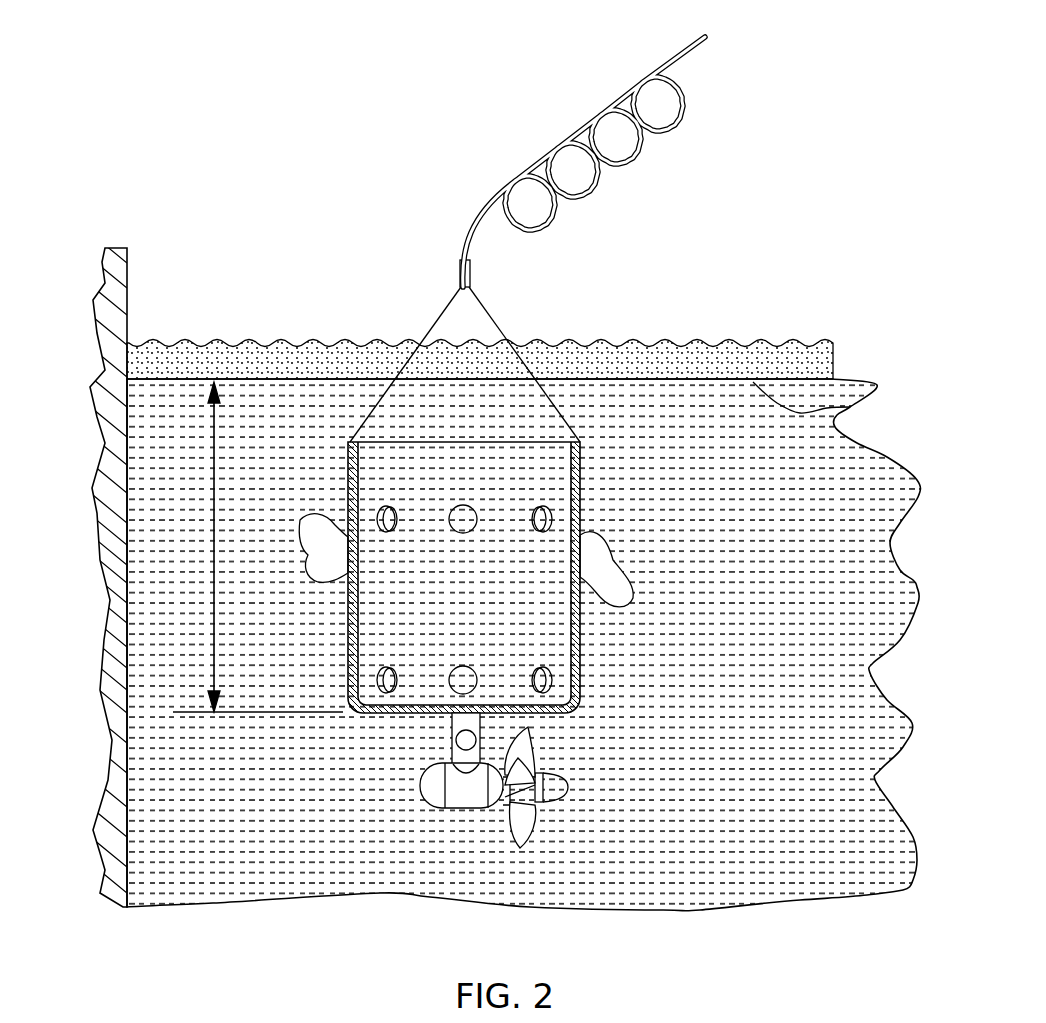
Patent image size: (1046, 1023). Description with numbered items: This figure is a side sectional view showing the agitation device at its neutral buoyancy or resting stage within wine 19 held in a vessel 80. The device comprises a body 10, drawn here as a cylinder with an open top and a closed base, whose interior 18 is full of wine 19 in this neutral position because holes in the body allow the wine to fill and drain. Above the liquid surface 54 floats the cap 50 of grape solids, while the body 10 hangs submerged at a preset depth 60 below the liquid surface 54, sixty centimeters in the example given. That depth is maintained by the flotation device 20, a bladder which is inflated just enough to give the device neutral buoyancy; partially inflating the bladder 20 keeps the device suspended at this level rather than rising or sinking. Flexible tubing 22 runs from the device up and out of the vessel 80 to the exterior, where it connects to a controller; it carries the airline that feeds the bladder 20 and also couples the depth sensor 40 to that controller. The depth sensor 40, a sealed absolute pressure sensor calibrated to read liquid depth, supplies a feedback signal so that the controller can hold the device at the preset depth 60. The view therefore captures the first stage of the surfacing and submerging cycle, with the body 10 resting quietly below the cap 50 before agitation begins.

The body 10 is at (506, 501).
The interior of body 18 is at (482, 472).
The wine 19 is at (740, 580).
The flotation device 20 is at (623, 575).
The flexible tubing 22 is at (673, 133).
The depth sensor 40 is at (450, 747).
The cap 50 is at (755, 340).
The liquid surface 54 is at (843, 410).
The preset depth 60 is at (214, 433).
The vessel 80 is at (127, 310).